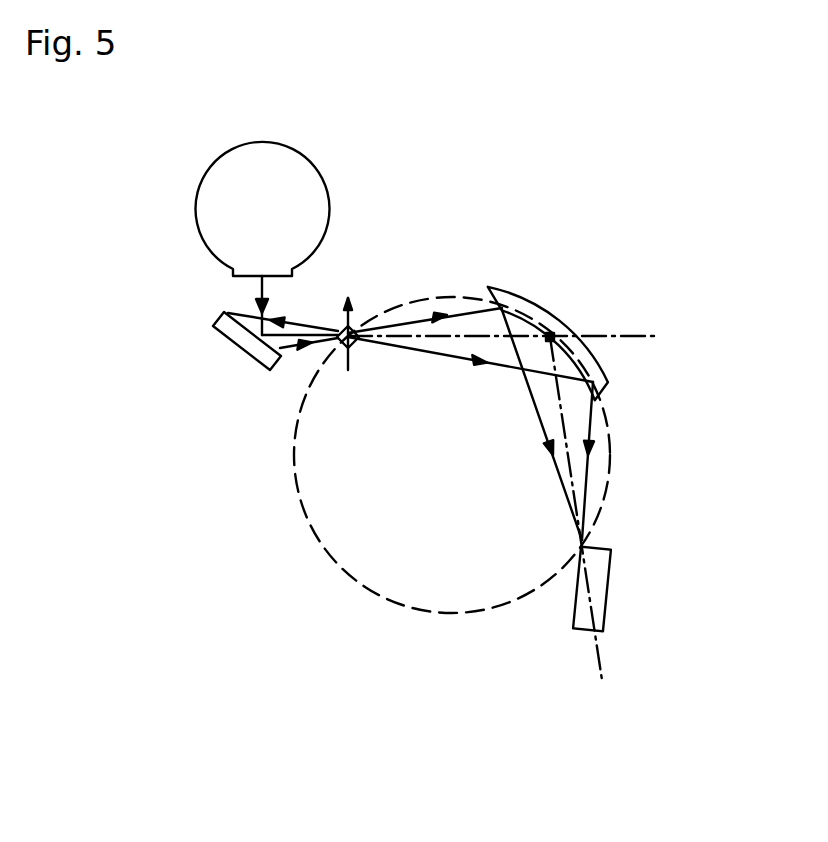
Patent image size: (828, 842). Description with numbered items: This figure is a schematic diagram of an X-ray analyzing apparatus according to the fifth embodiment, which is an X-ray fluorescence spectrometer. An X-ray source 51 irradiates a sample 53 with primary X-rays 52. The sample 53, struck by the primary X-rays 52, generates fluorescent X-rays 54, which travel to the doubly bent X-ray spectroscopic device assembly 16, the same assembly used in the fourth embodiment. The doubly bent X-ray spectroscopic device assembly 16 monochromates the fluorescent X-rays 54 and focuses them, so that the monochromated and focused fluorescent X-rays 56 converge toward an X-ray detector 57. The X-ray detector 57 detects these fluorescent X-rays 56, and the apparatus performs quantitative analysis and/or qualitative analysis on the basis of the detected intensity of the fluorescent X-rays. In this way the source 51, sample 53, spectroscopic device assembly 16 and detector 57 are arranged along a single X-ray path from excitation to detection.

The X-ray source 51 is at (278, 143).
The primary X-rays 52 is at (260, 291).
The sample 53 is at (226, 338).
The fluorescent X-rays 54 is at (302, 320).
The doubly bent X-ray spectroscopic device assembly 16 is at (535, 298).
The fluorescent X-rays 56 is at (593, 433).
The X-ray detector 57 is at (608, 580).